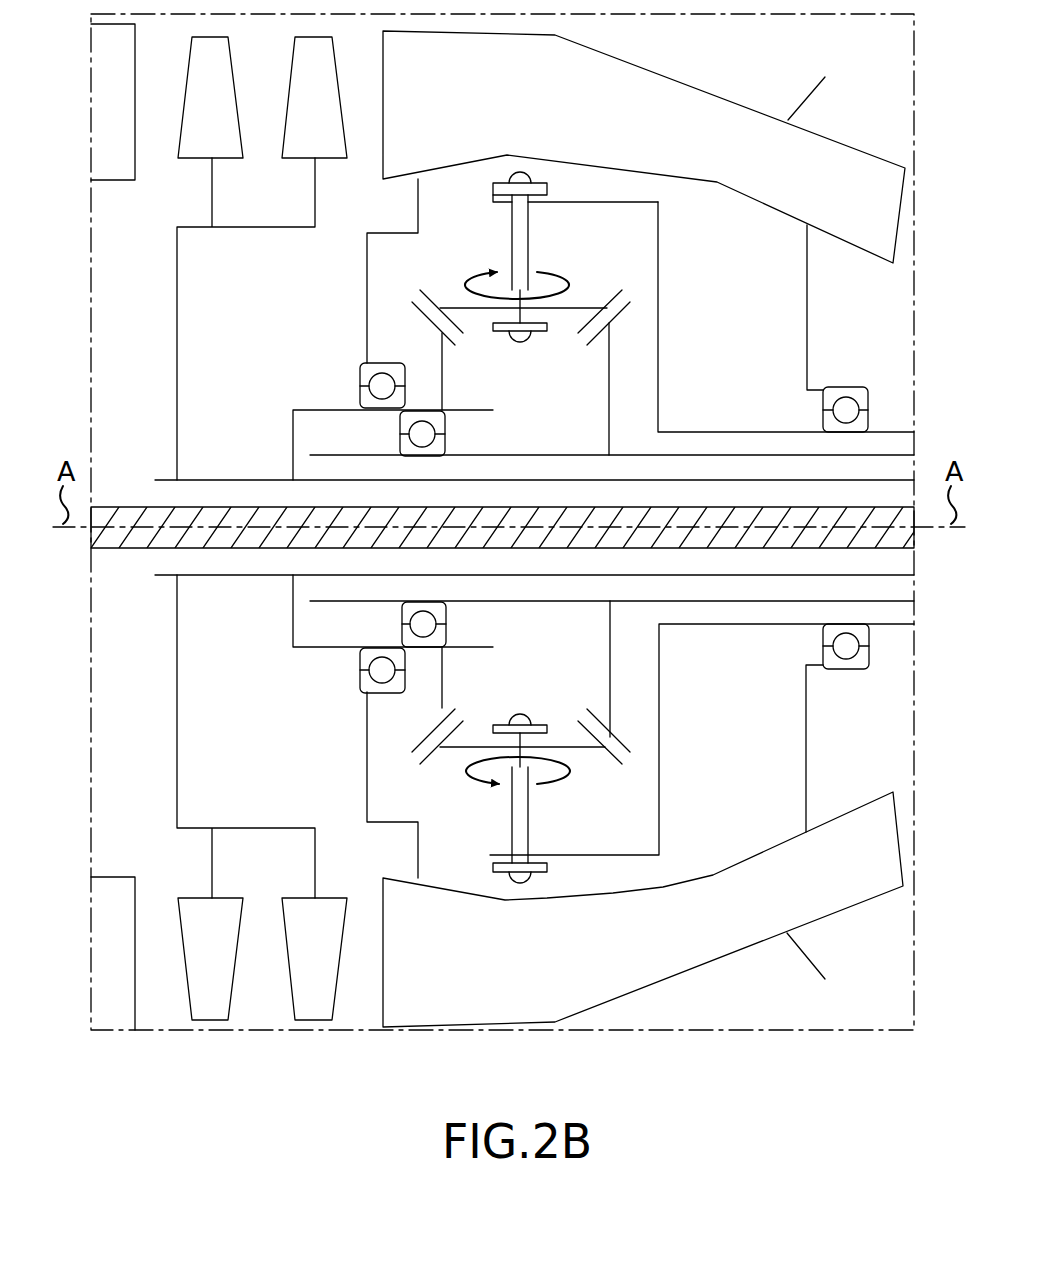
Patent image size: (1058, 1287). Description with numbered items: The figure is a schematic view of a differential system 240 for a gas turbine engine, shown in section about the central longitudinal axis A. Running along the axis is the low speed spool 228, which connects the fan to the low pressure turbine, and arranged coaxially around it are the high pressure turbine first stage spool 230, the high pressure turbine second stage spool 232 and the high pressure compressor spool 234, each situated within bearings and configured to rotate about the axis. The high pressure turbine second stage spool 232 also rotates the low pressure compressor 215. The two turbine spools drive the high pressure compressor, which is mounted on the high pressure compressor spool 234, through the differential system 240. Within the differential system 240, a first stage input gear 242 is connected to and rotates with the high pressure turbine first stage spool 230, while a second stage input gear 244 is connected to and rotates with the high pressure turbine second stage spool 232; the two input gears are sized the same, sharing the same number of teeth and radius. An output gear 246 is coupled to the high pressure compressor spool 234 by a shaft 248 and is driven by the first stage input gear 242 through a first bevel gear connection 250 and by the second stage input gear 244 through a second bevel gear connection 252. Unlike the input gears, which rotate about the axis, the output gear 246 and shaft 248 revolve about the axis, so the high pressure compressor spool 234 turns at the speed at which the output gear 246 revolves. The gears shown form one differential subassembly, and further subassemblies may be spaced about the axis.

The low pressure compressor 215 is at (166, 381).
The low speed spool 228 is at (145, 549).
The high pressure turbine first stage spool 230 is at (727, 455).
The high pressure turbine second stage spool 232 is at (783, 480).
The high pressure compressor spool 234 is at (680, 432).
The differential system 240 is at (516, 270).
The first stage input gear 242 is at (608, 410).
The second stage input gear 244 is at (436, 337).
The output gear 246 is at (590, 310).
The shaft 248 is at (511, 245).
The first bevel gear connection 250 is at (634, 297).
The second bevel gear connection 252 is at (466, 345).